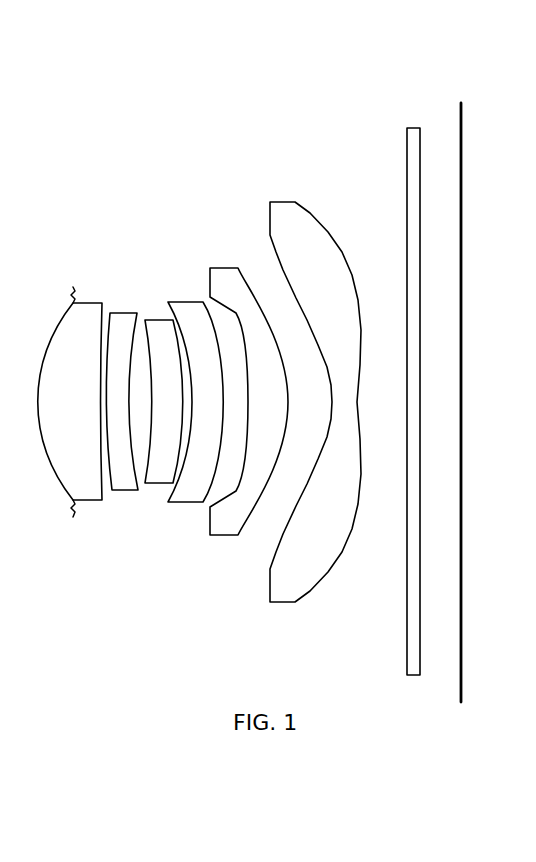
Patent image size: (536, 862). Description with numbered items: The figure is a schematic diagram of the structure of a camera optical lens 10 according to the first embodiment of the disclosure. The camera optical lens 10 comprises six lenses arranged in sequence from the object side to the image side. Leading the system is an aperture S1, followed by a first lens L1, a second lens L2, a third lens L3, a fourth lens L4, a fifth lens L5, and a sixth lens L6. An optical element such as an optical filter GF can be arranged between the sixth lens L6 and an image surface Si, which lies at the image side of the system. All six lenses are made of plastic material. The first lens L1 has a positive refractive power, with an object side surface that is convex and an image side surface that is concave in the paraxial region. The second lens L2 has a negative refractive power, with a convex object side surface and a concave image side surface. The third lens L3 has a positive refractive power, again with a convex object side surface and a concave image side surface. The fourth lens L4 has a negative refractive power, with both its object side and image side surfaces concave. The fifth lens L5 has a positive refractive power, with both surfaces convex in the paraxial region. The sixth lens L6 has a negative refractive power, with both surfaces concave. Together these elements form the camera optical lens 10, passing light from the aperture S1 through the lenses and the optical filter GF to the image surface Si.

The camera optical lens 10 is at (235, 53).
The aperture S1 is at (56, 399).
The first lens L1 is at (71, 385).
The second lens L2 is at (122, 387).
The third lens L3 is at (162, 387).
The fourth lens L4 is at (195, 385).
The fifth lens L5 is at (249, 389).
The sixth lens L6 is at (315, 388).
The optical filter GF is at (414, 383).
The image surface Si is at (469, 388).